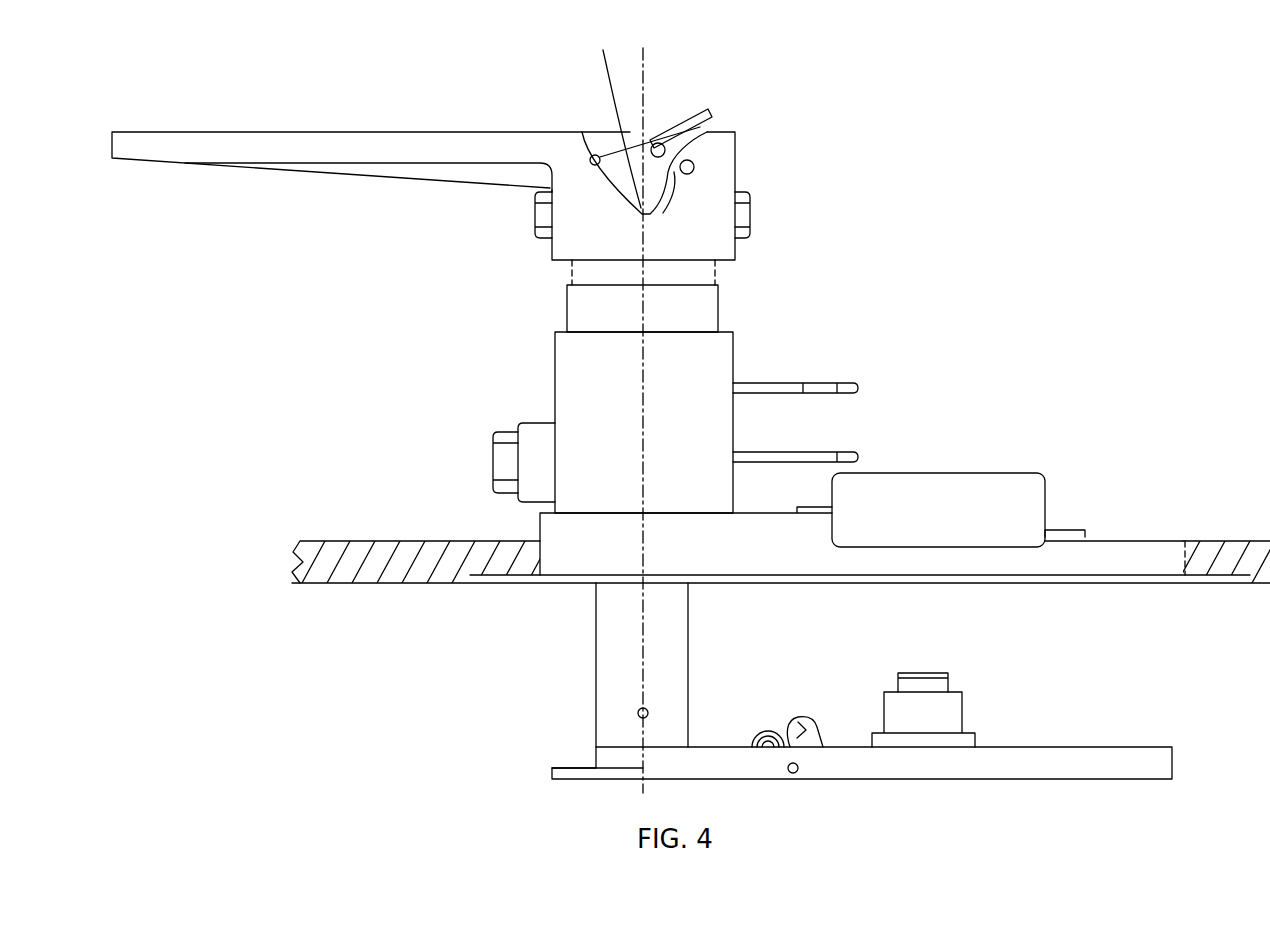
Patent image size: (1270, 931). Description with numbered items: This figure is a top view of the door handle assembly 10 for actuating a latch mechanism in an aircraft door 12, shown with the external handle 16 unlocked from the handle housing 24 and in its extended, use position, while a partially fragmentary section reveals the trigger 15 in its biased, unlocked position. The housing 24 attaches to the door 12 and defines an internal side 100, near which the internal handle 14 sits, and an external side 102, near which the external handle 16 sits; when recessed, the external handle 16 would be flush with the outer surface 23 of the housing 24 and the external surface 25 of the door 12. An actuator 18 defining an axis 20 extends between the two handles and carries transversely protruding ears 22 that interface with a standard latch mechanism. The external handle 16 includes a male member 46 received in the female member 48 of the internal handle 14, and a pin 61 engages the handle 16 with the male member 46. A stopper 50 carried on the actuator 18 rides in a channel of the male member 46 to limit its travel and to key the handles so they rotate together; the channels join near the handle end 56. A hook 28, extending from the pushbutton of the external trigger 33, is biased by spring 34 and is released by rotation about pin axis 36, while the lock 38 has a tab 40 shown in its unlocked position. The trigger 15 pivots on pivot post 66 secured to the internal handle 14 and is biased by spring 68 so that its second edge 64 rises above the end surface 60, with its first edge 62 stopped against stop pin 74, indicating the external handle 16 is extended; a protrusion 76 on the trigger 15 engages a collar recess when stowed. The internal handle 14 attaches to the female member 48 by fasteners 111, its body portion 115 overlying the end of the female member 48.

The door handle assembly 10 is at (990, 232).
The aircraft door 12 is at (367, 585).
The internal handle 14 is at (330, 128).
The trigger 15 is at (660, 122).
The external handle 16 is at (1118, 782).
The actuator 18 is at (847, 348).
The axis 20 is at (647, 56).
The ears 22 is at (860, 388).
The outer surface 23 is at (490, 585).
The handle housing 24 is at (1140, 532).
The external surface 25 is at (415, 585).
The hook 28 is at (803, 720).
The external trigger 33 is at (787, 783).
The spring 34 is at (767, 735).
The pin axis 36 is at (797, 773).
The lock 38 is at (962, 720).
The tab 40 is at (897, 687).
The male member 46 is at (595, 692).
The female member 48 is at (577, 377).
The stopper 50 is at (497, 470).
The handle end 56 is at (612, 780).
The end surface 60 is at (465, 128).
The pin 61 is at (637, 716).
The first edge 62 is at (597, 152).
The second edge 64 is at (716, 108).
The pivot post 66 is at (700, 127).
The spring 68 is at (702, 142).
The stop pin 74 is at (590, 157).
The protrusion 76 is at (614, 119).
The internal side 100 is at (1105, 497).
The external side 102 is at (1123, 622).
The fasteners 111 is at (535, 218).
The body portion 115 is at (715, 247).